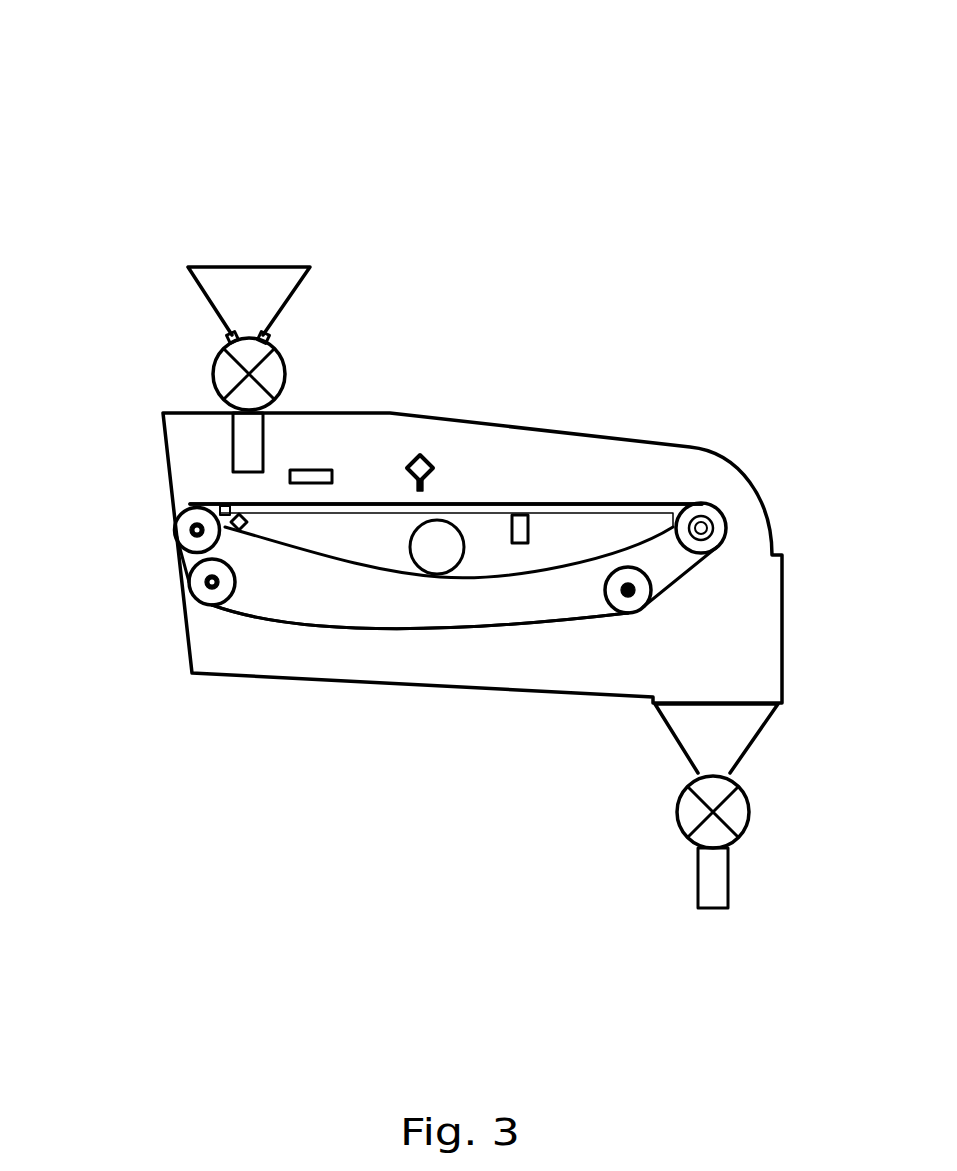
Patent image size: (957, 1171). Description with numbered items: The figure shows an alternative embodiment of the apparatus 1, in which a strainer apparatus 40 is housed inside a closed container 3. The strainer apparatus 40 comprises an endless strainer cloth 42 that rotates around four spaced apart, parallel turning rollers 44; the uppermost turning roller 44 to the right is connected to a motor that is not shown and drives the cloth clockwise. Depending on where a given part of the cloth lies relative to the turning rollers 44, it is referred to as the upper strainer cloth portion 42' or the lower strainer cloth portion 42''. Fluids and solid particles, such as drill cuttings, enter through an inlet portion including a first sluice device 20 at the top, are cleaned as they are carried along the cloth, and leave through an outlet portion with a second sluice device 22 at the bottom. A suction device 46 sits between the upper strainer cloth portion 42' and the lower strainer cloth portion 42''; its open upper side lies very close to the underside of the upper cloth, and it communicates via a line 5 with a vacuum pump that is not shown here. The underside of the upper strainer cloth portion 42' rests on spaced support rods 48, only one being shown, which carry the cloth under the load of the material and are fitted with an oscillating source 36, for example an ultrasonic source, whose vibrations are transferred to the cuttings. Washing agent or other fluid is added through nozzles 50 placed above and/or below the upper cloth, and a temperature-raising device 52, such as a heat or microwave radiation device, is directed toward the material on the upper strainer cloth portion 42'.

The apparatus 1 is at (106, 154).
The closed container 3 is at (584, 434).
The line 5 is at (460, 566).
The first sluice device 20 is at (213, 373).
The second sluice device 22 is at (750, 810).
The oscillating source 36 is at (521, 545).
The strainer apparatus 40 is at (239, 650).
The strainer cloth 42 is at (446, 475).
The upper strainer cloth portion 42' is at (446, 349).
The lower strainer cloth portion 42'' is at (420, 743).
The turning rollers 44 is at (189, 582).
The suction device 46 is at (380, 575).
The support rods 48 is at (567, 514).
The nozzle 50 is at (228, 334).
The temperature-raising device 52 is at (313, 470).